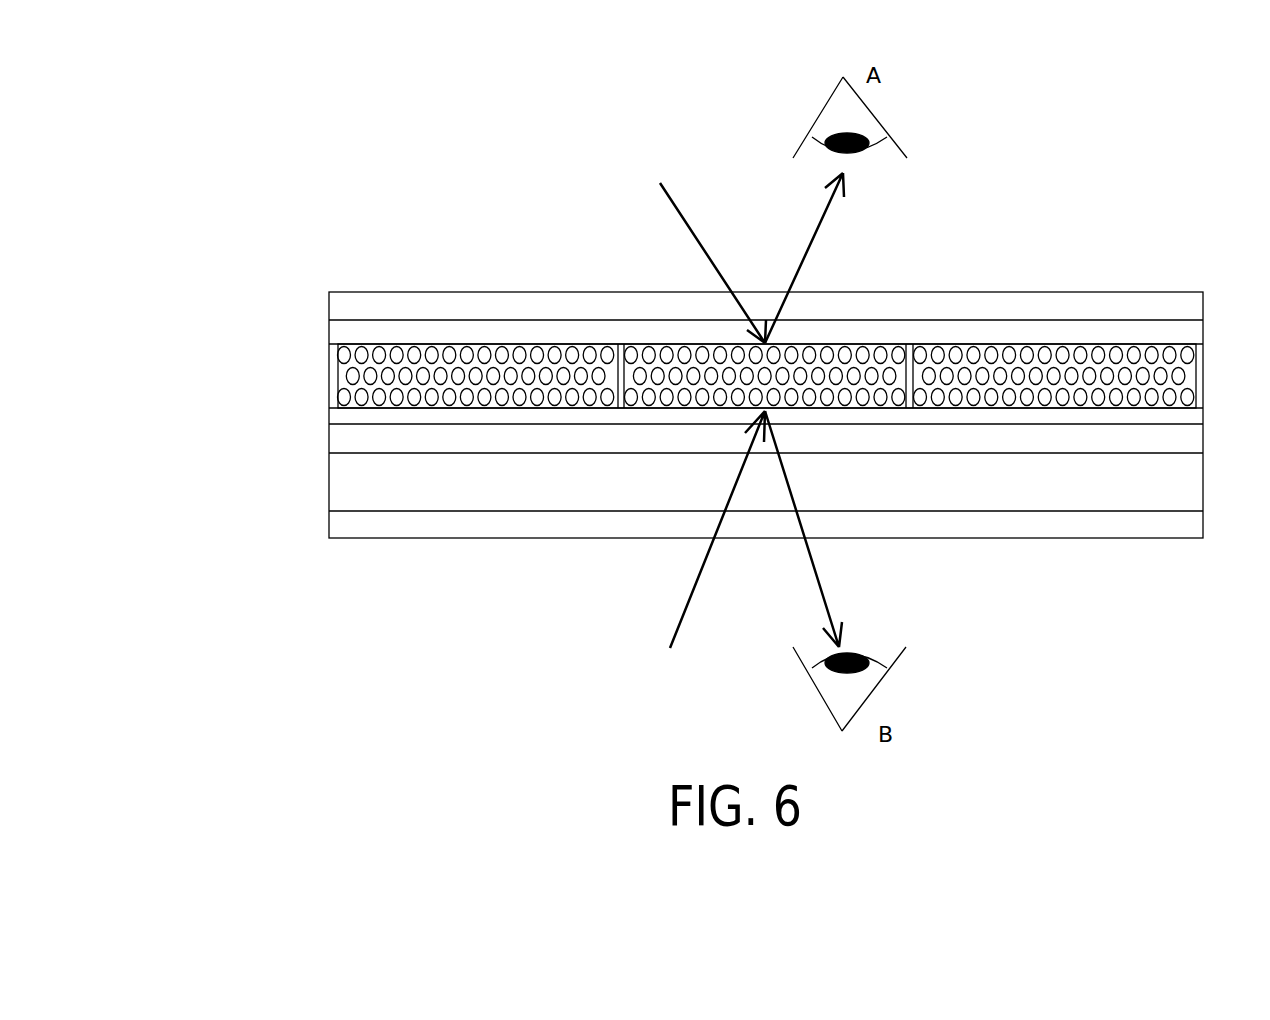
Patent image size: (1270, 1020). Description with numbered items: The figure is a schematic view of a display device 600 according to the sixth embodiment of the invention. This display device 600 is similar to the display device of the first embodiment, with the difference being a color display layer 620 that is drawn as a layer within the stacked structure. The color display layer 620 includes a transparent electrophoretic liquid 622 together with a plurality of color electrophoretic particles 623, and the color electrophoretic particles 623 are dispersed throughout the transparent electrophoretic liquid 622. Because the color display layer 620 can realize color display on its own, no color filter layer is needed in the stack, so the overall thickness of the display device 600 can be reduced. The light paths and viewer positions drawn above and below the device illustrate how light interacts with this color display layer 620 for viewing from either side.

The display device 600 is at (716, 462).
The color display layer 620 is at (691, 376).
The transparent electrophoretic liquid 622 is at (341, 368).
The color electrophoretic particles 623 is at (350, 377).